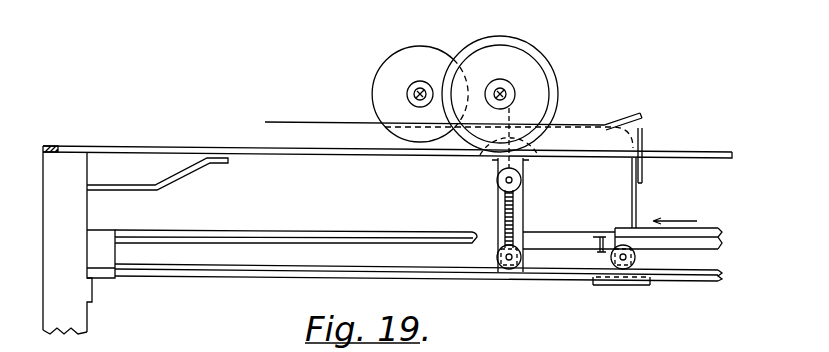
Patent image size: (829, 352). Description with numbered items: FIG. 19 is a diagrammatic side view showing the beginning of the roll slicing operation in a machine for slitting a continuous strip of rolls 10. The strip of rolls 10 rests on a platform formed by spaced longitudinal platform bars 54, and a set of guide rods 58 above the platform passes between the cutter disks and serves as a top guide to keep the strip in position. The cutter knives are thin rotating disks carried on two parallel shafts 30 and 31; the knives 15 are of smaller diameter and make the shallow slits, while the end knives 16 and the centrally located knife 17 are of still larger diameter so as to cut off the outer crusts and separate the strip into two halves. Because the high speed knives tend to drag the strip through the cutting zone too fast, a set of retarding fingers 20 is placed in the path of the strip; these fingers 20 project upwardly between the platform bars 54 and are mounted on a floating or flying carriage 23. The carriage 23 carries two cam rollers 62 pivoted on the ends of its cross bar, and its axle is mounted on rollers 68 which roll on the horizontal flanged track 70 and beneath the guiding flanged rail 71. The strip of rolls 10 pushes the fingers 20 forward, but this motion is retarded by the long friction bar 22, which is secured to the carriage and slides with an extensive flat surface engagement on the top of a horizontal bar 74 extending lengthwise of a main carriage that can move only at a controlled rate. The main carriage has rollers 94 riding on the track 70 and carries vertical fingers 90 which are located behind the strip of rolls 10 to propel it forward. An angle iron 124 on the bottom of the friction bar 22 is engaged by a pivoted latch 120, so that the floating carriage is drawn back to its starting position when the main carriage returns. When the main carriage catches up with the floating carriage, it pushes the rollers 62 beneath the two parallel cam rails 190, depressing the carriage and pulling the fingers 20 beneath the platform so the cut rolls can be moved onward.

The strip of rolls 10 is at (572, 156).
The knives 15 is at (392, 34).
The end knives 16 is at (540, 40).
The centrally located knife 17 is at (548, 70).
The fingers 20 is at (484, 160).
The friction bar 22 is at (545, 231).
The flying carriage 23 is at (504, 216).
The shaft 30 is at (415, 93).
The shaft 31 is at (512, 94).
The platform bars 54 is at (330, 154).
The guide rods 58 is at (630, 118).
The cam rollers 62 is at (498, 184).
The rollers 68 is at (496, 256).
The flanged track 70 is at (152, 277).
The guiding flanged rail 71 is at (314, 230).
The horizontal bar 74 is at (719, 247).
The fingers 90 is at (646, 134).
The rollers 94 is at (636, 258).
The latch 120 is at (597, 283).
The angle iron 124 is at (600, 236).
The cam rails 190 is at (172, 177).